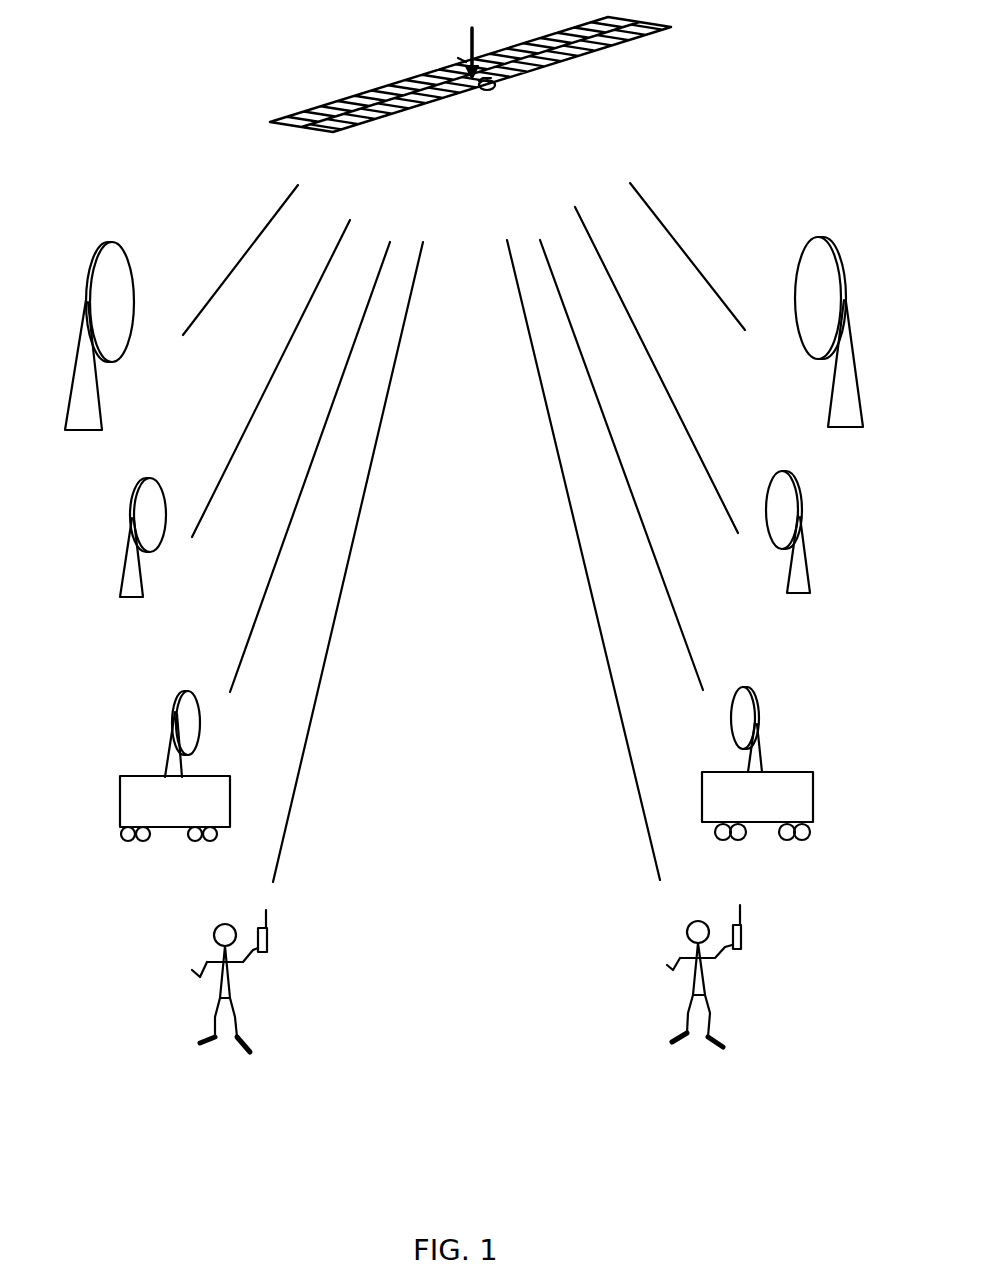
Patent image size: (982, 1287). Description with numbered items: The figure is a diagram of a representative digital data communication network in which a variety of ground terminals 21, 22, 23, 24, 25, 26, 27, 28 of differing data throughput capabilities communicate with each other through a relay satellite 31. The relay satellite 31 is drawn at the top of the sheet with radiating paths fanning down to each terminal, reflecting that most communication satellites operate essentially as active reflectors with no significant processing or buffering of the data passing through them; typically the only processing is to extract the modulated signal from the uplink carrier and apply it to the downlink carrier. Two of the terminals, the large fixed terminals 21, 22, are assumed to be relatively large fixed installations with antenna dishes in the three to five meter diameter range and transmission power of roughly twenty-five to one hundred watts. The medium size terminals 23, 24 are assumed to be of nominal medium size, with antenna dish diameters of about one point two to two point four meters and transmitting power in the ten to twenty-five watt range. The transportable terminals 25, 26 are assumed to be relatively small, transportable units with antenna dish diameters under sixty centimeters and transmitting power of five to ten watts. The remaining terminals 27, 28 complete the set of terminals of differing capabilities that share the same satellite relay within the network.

The relay satellite 31 is at (630, 37).
The large fixed terminal 21 is at (92, 255).
The large fixed terminal 22 is at (837, 247).
The medium size terminal 23 is at (135, 493).
The medium size terminal 24 is at (795, 477).
The transportable terminal 25 is at (177, 710).
The transportable terminal 26 is at (755, 692).
The terminal 27 is at (214, 935).
The terminal 28 is at (743, 923).